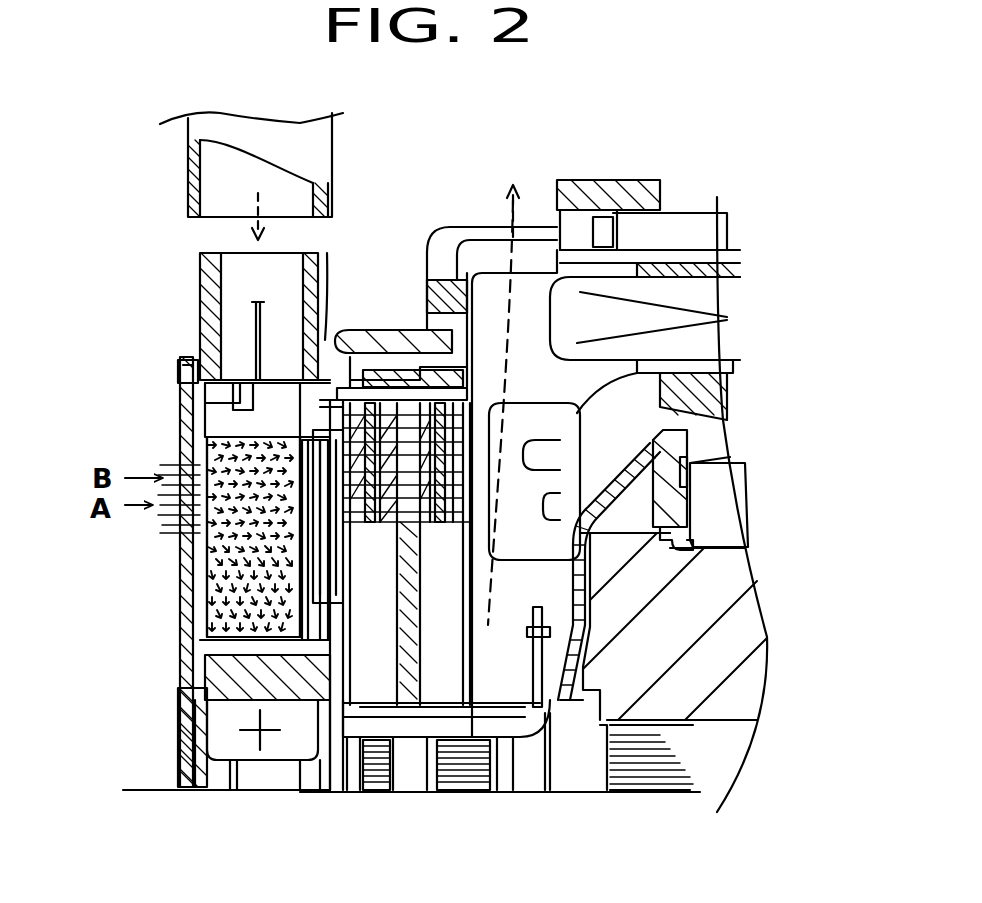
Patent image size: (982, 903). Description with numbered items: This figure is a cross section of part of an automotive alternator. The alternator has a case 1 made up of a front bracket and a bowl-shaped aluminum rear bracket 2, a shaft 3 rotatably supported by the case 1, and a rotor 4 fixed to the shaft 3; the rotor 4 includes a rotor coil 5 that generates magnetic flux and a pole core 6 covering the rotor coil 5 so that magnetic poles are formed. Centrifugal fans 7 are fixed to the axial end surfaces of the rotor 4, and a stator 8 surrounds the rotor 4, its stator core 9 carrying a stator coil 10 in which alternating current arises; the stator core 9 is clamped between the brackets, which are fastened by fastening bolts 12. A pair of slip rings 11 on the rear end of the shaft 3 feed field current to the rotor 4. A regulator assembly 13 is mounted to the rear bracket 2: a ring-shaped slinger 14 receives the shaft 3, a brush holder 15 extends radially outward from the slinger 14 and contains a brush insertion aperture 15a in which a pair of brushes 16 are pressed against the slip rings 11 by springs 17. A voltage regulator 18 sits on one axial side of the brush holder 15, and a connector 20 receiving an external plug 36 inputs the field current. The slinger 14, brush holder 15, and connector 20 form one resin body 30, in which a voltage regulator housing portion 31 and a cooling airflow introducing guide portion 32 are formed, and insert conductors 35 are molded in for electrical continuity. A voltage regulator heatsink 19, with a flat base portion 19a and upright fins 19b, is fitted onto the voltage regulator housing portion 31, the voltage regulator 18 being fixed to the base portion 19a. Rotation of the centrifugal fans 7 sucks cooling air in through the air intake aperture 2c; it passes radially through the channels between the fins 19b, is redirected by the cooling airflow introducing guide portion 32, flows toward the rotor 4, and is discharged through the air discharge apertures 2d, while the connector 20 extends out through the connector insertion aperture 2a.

The case 1 is at (428, 243).
The rear bracket 2 is at (445, 221).
The connector insertion aperture 2a is at (327, 253).
The air intake aperture 2c is at (170, 468).
The air discharge apertures 2d is at (490, 237).
The shaft 3 is at (730, 758).
The rotor 4 is at (823, 490).
The rotor coil 5 is at (727, 500).
The pole core 6 is at (740, 570).
The centrifugal fans 7 is at (525, 425).
The stator 8 is at (820, 257).
The stator core 9 is at (735, 268).
The stator coil 10 is at (715, 320).
The slip rings 11 is at (372, 692).
The fastening bolts 12 is at (715, 232).
The regulator assembly 13 is at (190, 293).
The slinger 14 is at (322, 700).
The brush holder 15 is at (493, 688).
The brush insertion aperture 15a is at (552, 690).
The brushes 16 is at (357, 725).
The springs 17 is at (352, 365).
The voltage regulator 18 is at (280, 570).
The voltage regulator heatsink 19 is at (80, 545).
The base portion 19a is at (320, 588).
The fins 19b is at (213, 557).
The connector 20 is at (195, 257).
The resin body 30 is at (198, 340).
The voltage regulator housing portion 31 is at (195, 705).
The cooling airflow introducing guide portion 32 is at (203, 414).
The insert conductors 35 is at (178, 369).
The external plug 36 is at (185, 142).